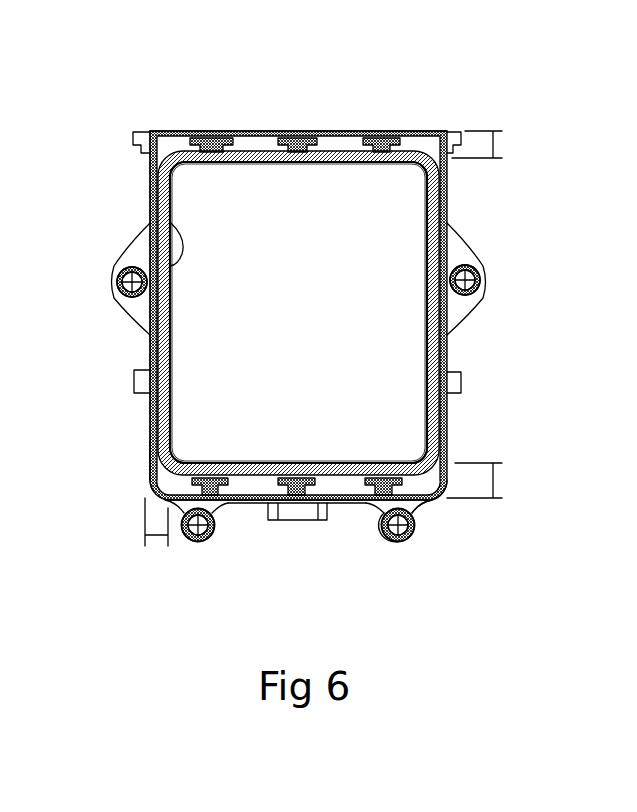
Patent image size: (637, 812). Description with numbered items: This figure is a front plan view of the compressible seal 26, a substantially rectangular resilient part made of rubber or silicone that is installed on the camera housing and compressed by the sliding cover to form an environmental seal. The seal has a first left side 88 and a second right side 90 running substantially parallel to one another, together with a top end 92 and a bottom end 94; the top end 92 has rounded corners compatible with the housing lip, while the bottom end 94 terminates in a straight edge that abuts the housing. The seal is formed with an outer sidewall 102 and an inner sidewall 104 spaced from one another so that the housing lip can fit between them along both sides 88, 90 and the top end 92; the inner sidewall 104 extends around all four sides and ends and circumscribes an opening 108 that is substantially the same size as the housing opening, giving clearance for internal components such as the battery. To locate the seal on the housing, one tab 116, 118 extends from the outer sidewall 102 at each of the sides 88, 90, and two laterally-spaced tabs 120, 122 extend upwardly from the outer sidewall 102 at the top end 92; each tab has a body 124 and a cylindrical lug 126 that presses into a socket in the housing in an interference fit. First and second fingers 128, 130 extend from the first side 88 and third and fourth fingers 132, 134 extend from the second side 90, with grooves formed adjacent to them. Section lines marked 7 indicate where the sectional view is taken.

The section line 7- 7 is at (295, 128).
The compressible seal 26 is at (360, 110).
The first left side 88 is at (450, 345).
The second right side 90 is at (148, 458).
The top end 92 is at (247, 483).
The bottom end 94 is at (237, 131).
The outer sidewall 102 is at (143, 435).
The inner sidewall 104 is at (147, 192).
The opening 108 is at (333, 372).
The tab 116 is at (483, 287).
The tab 118 is at (116, 278).
The tab 120 is at (413, 535).
The tab 122 is at (193, 545).
The body 124 is at (423, 512).
The cylindrical lug 126 is at (390, 540).
The first finger 128 is at (452, 372).
The second finger 130 is at (452, 134).
The third finger 132 is at (133, 378).
The fourth finger 134 is at (141, 132).